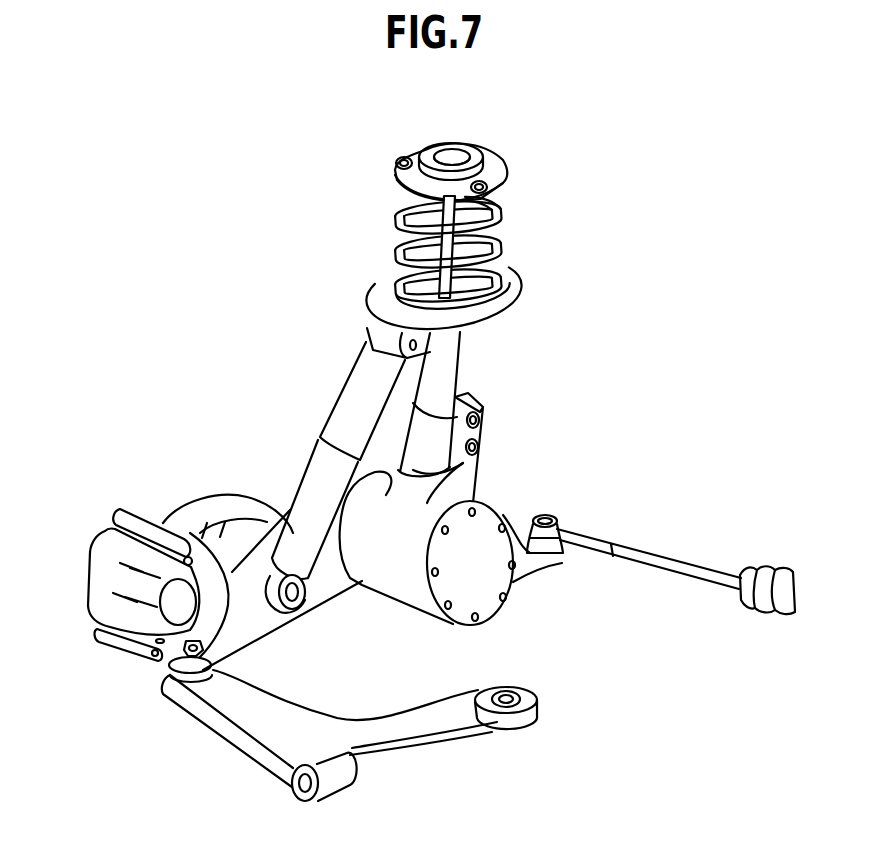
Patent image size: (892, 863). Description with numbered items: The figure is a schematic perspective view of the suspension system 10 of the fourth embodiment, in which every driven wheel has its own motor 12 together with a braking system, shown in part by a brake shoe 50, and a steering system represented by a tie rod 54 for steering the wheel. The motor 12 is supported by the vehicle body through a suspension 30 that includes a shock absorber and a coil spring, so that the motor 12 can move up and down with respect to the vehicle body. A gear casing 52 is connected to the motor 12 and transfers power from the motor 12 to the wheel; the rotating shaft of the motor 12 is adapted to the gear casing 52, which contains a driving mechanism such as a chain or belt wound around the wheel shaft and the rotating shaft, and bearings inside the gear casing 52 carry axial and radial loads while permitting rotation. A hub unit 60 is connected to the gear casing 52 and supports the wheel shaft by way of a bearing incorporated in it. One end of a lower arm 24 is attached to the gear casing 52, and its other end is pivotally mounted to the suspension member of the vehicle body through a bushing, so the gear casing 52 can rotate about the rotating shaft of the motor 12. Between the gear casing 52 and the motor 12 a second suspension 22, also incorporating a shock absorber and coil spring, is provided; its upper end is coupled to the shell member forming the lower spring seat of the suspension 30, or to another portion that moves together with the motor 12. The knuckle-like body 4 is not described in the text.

The suspension system 10 is at (122, 140).
The suspension 30 is at (518, 252).
The suspension 22 is at (308, 447).
The knuckle 4 is at (326, 584).
The motor 12 is at (485, 518).
The gear casing 52 is at (248, 495).
The hub unit 60 is at (215, 497).
The brake shoe 50 is at (112, 549).
The lower arm 24 is at (254, 718).
The tie rod 54 is at (683, 559).